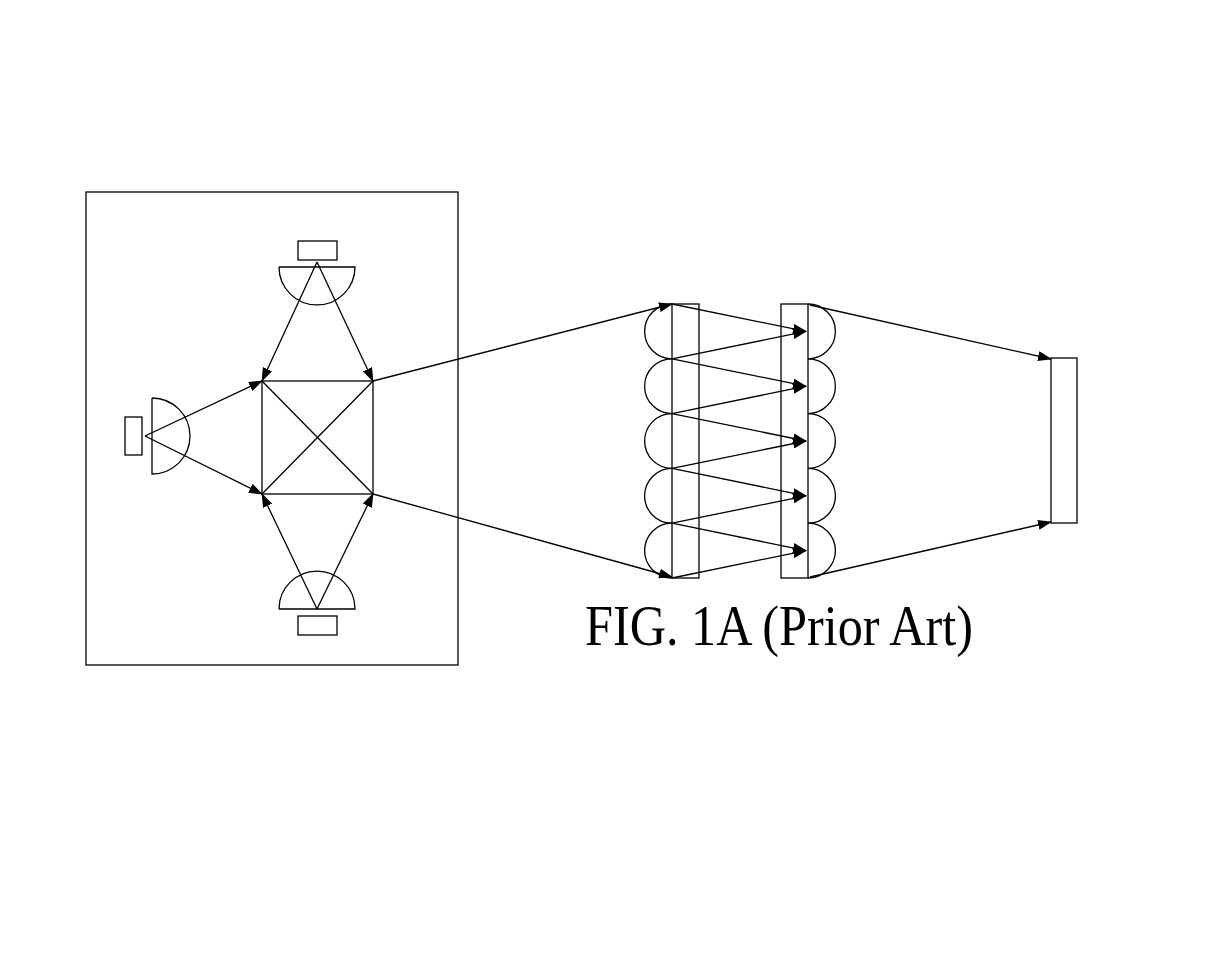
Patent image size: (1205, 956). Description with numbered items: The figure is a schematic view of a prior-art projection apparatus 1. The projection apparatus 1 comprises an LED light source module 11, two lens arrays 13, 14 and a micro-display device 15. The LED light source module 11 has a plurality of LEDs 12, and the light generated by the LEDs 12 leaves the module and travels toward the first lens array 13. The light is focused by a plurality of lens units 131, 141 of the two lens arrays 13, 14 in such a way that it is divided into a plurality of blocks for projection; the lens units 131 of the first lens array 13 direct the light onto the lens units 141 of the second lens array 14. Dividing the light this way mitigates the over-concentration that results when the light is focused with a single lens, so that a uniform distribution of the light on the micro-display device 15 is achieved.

The projection apparatus 1 is at (774, 100).
The LED light source module 11 is at (230, 191).
The LED 12 is at (319, 244).
The lens array 13 is at (683, 303).
The lens unit 131 is at (645, 331).
The lens array 14 is at (794, 303).
The lens unit 141 is at (837, 331).
The micro-display device 15 is at (1080, 440).